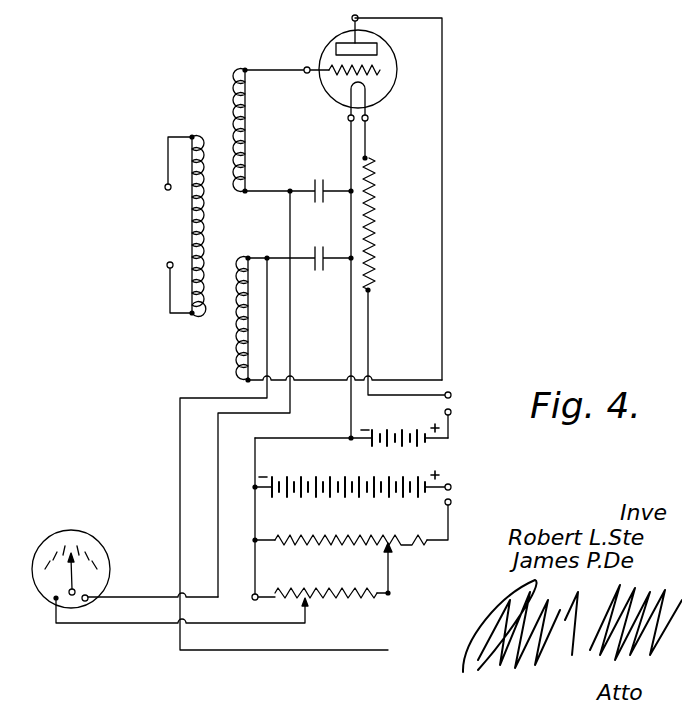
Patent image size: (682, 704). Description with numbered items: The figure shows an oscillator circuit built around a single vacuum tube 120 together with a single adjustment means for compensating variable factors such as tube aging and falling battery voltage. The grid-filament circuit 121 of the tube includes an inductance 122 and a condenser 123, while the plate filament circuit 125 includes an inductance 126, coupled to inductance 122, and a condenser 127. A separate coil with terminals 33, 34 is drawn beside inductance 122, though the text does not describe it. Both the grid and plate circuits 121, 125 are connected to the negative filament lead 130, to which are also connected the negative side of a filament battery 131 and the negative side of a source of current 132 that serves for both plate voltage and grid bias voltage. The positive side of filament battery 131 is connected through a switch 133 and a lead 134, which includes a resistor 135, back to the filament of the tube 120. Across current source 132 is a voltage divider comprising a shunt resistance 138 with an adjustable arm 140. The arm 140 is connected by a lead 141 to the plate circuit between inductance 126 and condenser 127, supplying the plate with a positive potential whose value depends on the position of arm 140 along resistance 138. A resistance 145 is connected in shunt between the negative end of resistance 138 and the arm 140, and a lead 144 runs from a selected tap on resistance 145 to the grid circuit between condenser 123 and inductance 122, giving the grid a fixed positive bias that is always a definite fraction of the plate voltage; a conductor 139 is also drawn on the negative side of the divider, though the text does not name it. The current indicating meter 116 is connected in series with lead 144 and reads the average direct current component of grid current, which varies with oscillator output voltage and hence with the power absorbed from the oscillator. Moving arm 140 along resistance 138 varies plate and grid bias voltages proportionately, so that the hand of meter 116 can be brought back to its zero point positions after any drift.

The terminal 33 is at (163, 187).
The terminal 34 is at (169, 265).
The current indicating meter 116 is at (105, 548).
The vacuum tube 120 is at (338, 40).
The grid-filament circuit 121 is at (280, 69).
The inductance 122 is at (232, 112).
The condenser 123 is at (325, 180).
The plate filament circuit 125 is at (443, 119).
The inductance 126 is at (234, 343).
The condenser 127 is at (327, 273).
The negative filament lead 130 is at (349, 134).
The filament battery 131 is at (428, 449).
The source of current 132 is at (418, 481).
The switch 133 is at (453, 404).
The lead 134 is at (371, 319).
The resistor 135 is at (371, 225).
The shunt resistance 138 is at (357, 537).
The conductor 139 is at (257, 571).
The adjustable arm 140 is at (390, 574).
The lead 141 is at (180, 466).
The lead 144 is at (105, 625).
The resistance 145 is at (314, 593).